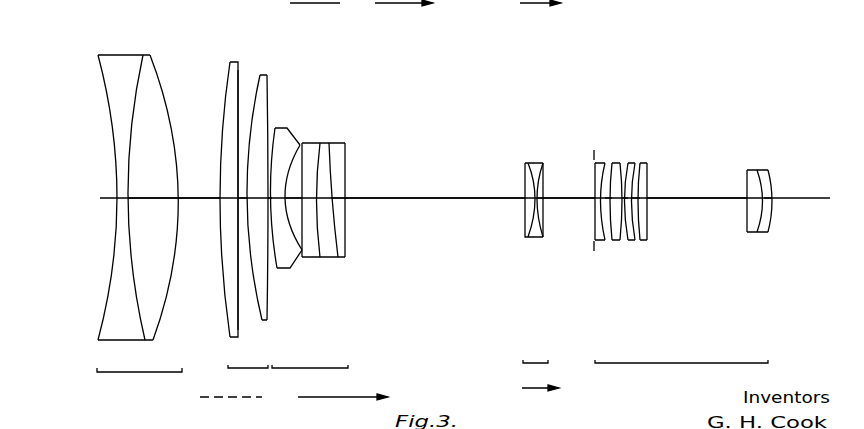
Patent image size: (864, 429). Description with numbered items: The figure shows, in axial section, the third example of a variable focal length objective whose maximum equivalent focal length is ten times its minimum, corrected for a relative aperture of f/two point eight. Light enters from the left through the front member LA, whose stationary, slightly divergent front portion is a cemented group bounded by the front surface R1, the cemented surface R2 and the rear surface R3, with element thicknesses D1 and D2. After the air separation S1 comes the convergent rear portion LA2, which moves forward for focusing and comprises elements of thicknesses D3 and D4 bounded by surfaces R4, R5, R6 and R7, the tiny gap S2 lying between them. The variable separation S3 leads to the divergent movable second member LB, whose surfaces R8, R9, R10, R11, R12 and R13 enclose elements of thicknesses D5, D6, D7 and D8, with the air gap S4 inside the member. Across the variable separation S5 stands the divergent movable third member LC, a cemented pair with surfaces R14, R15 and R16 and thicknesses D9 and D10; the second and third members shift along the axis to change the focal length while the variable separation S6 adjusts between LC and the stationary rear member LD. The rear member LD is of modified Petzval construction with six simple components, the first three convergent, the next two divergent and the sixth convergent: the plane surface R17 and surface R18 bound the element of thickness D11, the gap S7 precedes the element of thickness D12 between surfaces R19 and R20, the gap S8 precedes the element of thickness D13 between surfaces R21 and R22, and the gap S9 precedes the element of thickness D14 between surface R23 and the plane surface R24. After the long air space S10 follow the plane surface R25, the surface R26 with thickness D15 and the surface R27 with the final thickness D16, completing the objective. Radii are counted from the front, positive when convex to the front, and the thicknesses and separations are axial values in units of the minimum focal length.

The front surface radius of curvature R1 is at (117, 172).
The second surface radius of curvature R2 is at (130, 124).
The third surface radius of curvature R3 is at (222, 102).
The fourth surface radius of curvature R4 is at (221, 98).
The fifth surface radius of curvature R5 is at (237, 83).
The sixth surface radius of curvature R6 is at (262, 77).
The seventh surface radius of curvature R7 is at (268, 90).
The eighth surface radius of curvature R8 is at (284, 160).
The ninth surface radius of curvature R9 is at (283, 195).
The tenth surface radius of curvature R10 is at (304, 241).
The eleventh surface radius of curvature R11 is at (328, 257).
The twelfth surface radius of curvature R12 is at (345, 252).
The thirteenth surface radius of curvature R13 is at (347, 204).
The fourteenth surface radius of curvature R14 is at (527, 182).
The fifteenth surface radius of curvature R15 is at (532, 166).
The sixteenth surface radius of curvature R16 is at (546, 174).
The seventeenth surface radius of curvature R17 is at (595, 180).
The eighteenth surface radius of curvature R18 is at (602, 163).
The nineteenth surface radius of curvature R19 is at (609, 163).
The twentieth surface radius of curvature R20 is at (623, 163).
The twenty-first surface radius of curvature R21 is at (636, 166).
The twenty-second surface radius of curvature R22 is at (646, 180).
The twenty-third surface radius of curvature R23 is at (643, 172).
The twenty-fourth surface radius of curvature R24 is at (648, 182).
The twenty-fifth surface radius of curvature R25 is at (757, 173).
The twenty-sixth surface radius of curvature R26 is at (764, 183).
The twenty-seventh surface radius of curvature R27 is at (768, 187).
The axial thickness of first element D1 is at (121, 199).
The axial thickness of second element D2 is at (150, 199).
The axial thickness of third element D3 is at (229, 200).
The axial thickness of fourth element D4 is at (264, 321).
The axial thickness of fifth element D5 is at (284, 164).
The axial thickness of sixth element D6 is at (345, 203).
The axial thickness of seventh element D7 is at (320, 202).
The axial thickness of eighth element D8 is at (315, 200).
The axial thickness of ninth element D9 is at (533, 199).
The axial thickness of tenth element D10 is at (542, 237).
The axial thickness of eleventh element D11 is at (600, 206).
The axial thickness of twelfth element D12 is at (617, 206).
The axial thickness of thirteenth element D13 is at (633, 206).
The axial thickness of fourteenth element D14 is at (643, 205).
The axial thickness of fifteenth element D15 is at (765, 226).
The axial thickness of sixteenth element D16 is at (760, 204).
The first axial air separation S1 is at (200, 199).
The second axial air separation S2 is at (238, 200).
The third axial air separation S3 is at (278, 197).
The fourth axial air separation S4 is at (296, 197).
The fifth axial air separation S5 is at (448, 197).
The sixth axial air separation S6 is at (572, 199).
The seventh axial air separation S7 is at (607, 207).
The eighth axial air separation S8 is at (624, 206).
The ninth axial air separation S9 is at (637, 205).
The tenth axial air separation S10 is at (731, 200).
The front member LA is at (139, 380).
The rear portion of front member LA2 is at (248, 377).
The movable second member LB is at (310, 378).
The movable third member LC is at (540, 375).
The stationary rear member LD is at (681, 373).